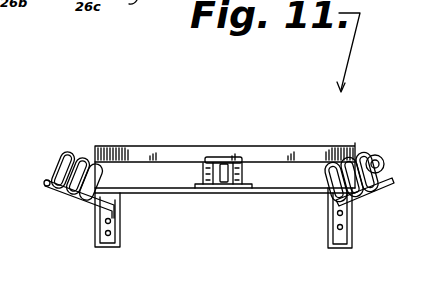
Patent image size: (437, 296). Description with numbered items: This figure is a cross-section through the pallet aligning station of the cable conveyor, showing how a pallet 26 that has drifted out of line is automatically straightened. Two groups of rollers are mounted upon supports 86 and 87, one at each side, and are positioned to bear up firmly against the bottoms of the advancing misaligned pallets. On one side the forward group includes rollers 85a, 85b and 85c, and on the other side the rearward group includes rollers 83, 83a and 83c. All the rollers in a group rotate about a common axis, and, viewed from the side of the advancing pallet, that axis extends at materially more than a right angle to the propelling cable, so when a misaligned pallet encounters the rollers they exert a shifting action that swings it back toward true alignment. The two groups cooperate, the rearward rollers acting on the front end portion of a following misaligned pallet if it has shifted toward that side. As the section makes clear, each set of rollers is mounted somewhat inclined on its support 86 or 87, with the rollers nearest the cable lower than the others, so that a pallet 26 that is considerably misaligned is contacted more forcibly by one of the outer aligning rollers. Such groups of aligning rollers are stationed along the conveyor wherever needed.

The pallet 26 is at (240, 147).
The roller 83 is at (378, 163).
The roller 83a is at (352, 146).
The right roller 83c is at (336, 168).
The roller 85a is at (113, 147).
The roller 85b is at (88, 160).
The left roller 85c is at (71, 155).
The support 86 is at (82, 210).
The support 87 is at (377, 194).